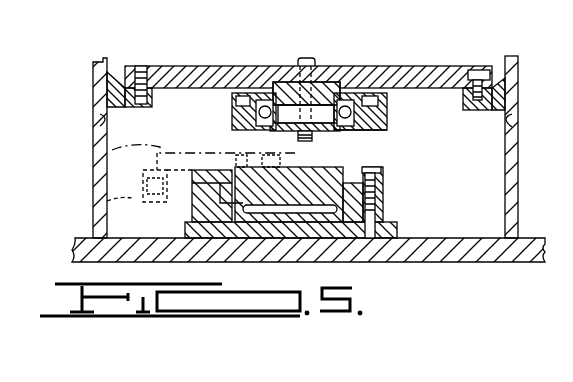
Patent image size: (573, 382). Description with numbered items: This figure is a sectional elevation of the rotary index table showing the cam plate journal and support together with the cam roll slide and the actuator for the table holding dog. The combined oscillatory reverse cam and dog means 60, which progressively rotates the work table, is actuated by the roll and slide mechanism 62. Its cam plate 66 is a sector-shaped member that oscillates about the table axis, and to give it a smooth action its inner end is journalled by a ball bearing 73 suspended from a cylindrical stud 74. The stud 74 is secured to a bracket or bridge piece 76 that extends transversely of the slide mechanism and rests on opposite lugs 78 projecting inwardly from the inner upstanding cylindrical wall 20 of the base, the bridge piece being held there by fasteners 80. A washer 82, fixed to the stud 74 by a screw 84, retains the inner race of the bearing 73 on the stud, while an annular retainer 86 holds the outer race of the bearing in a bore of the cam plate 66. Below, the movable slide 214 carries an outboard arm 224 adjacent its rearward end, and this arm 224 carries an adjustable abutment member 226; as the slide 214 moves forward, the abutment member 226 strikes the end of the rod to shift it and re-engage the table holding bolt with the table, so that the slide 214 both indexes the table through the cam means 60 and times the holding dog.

The inner upstanding cylindrical wall 20 is at (519, 183).
The combined oscillatory reverse cam and dog means 60 is at (388, 117).
The roll and slide mechanism 62 is at (388, 171).
The cam plate 66 is at (233, 122).
The ball bearing 73 is at (267, 66).
The cylindrical stud 74 is at (337, 67).
The bracket or bridge piece 76 is at (430, 78).
The lugs 78 is at (100, 122).
The fasteners 80 is at (478, 68).
The washer 82 is at (351, 163).
The screw 84 is at (306, 133).
The annular retainer 86 is at (375, 92).
The movable slide 214 is at (388, 198).
The outboard arm 224 is at (107, 153).
The adjustable abutment member 226 is at (107, 201).